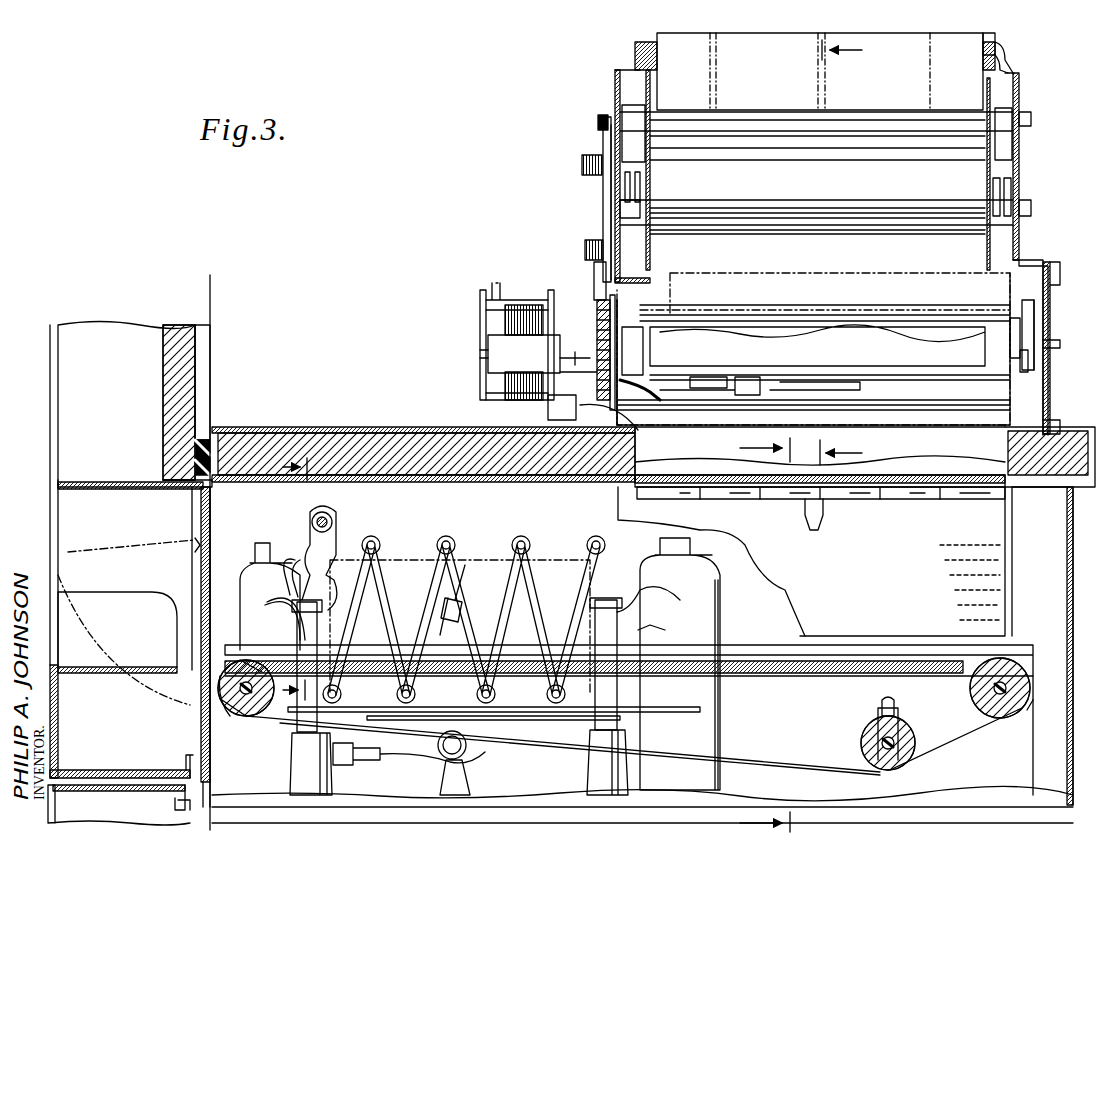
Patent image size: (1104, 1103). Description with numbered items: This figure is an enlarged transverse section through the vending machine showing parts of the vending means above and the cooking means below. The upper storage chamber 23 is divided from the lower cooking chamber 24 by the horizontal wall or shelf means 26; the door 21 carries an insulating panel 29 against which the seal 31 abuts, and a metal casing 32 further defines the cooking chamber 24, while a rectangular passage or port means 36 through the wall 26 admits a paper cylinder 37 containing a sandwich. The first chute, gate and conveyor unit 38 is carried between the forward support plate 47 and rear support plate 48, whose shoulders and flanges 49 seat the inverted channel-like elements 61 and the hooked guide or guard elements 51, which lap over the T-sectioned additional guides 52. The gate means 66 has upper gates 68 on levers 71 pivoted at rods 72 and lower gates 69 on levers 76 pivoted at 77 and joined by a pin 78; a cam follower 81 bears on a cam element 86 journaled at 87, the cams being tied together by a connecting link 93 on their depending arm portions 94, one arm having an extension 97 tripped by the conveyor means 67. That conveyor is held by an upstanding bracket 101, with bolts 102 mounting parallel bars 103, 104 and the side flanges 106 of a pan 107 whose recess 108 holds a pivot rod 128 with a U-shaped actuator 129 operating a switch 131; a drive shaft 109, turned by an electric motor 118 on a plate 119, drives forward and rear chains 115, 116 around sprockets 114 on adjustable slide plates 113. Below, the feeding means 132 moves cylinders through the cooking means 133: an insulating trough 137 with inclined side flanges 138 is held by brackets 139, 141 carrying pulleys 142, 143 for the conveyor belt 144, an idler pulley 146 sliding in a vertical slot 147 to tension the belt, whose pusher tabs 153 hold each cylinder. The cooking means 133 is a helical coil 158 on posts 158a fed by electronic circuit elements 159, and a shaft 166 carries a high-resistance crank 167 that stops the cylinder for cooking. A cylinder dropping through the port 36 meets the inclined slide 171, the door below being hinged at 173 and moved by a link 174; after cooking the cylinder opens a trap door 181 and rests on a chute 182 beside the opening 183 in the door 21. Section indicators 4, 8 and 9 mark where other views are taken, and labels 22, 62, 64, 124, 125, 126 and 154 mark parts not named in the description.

The section line 4 is at (849, 252).
The section line 8 is at (765, 631).
The section line 9 is at (291, 579).
The door 21 is at (50, 378).
The base rim 22 is at (114, 793).
The storage chamber 23 is at (394, 306).
The cooking chamber 24 is at (395, 485).
The wall or shelf means 26 is at (340, 427).
The insulating panel 29 is at (174, 325).
The seal 31 is at (200, 370).
The rectangular casing 32 is at (1066, 563).
The passage or port means 36 is at (962, 490).
The paper cylinder 37 is at (906, 273).
The first chute, gate and conveyor unit 38 is at (528, 218).
The forward support plate 47 is at (614, 92).
The rear support plate 48 is at (1021, 160).
The shoulders and flanges 49 is at (640, 72).
The guide or guard element 51 is at (650, 85).
The additional guide or guard elements 52 is at (648, 282).
The inverted channel-like elements 61 is at (636, 48).
The drum 62 is at (820, 71).
The end wall 64 is at (984, 46).
The gate means 66 is at (1024, 188).
The conveyor means 67 is at (594, 327).
The upper gates 68 is at (871, 156).
The lower gates 69 is at (852, 236).
The upper gate levers 71 is at (638, 128).
The pivots 72 is at (874, 113).
The lower gate levers 76 is at (1002, 194).
The pivots 77 is at (787, 200).
The pin 78 is at (642, 184).
The cam follower 81 is at (598, 126).
The cam elements 86 is at (603, 208).
The journal elements 87 is at (582, 164).
The connecting rod or link 93 is at (586, 250).
The depending arm portion 94 is at (603, 230).
The extension 97 is at (595, 287).
The plate or bracket 101 is at (633, 420).
The bolts 102 is at (562, 358).
The bar 103 is at (648, 355).
The bar 104 is at (992, 382).
The vertical side flanges 106 is at (740, 335).
The pan 107 is at (907, 376).
The recess or well 108 is at (878, 407).
The drive shaft 109 is at (762, 330).
The slide plates 113 is at (640, 395).
The sprockets 114 is at (1030, 332).
The forward chain 115 is at (597, 390).
The rear chain 116 is at (1036, 300).
The electric motor 118 is at (515, 300).
The plate 119 is at (551, 292).
The rod 124 is at (812, 314).
The rod 125 is at (901, 322).
The plate 126 is at (952, 412).
The pivot rod 128 is at (758, 396).
The U-shaped actuator 129 is at (851, 391).
The switch 131 is at (706, 389).
The feeding or conveying means 132 is at (980, 755).
The cooking means 133 is at (530, 535).
The insulating trough 137 is at (822, 676).
The inclined side flanges 138 is at (752, 658).
The bracket 139 is at (1022, 774).
The bracket 141 is at (218, 740).
The drive pulley 142 is at (1008, 665).
The pulley 143 is at (252, 705).
The conveyor belt 144 is at (830, 652).
The idler pulley 146 is at (905, 724).
The vertical slot 147 is at (886, 706).
The pusher tab 153 is at (215, 675).
The belt run 154 is at (1020, 712).
The helical coil 158 is at (408, 558).
The posts 158a is at (297, 634).
The electronic circuit elements 159 is at (252, 590).
The shaft 166 is at (330, 516).
The high-resistance crank 167 is at (333, 555).
The inclined chute or slide 171 is at (1005, 516).
The hinge 173 is at (900, 499).
The link 174 is at (814, 532).
The trap door 181 is at (112, 555).
The chute 182 is at (120, 678).
The opening 183 is at (50, 558).